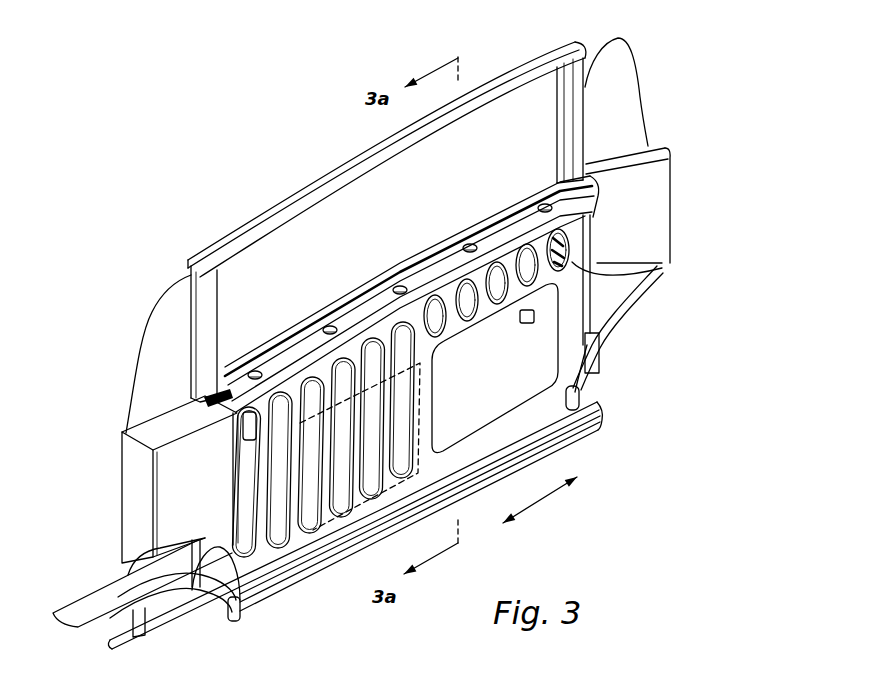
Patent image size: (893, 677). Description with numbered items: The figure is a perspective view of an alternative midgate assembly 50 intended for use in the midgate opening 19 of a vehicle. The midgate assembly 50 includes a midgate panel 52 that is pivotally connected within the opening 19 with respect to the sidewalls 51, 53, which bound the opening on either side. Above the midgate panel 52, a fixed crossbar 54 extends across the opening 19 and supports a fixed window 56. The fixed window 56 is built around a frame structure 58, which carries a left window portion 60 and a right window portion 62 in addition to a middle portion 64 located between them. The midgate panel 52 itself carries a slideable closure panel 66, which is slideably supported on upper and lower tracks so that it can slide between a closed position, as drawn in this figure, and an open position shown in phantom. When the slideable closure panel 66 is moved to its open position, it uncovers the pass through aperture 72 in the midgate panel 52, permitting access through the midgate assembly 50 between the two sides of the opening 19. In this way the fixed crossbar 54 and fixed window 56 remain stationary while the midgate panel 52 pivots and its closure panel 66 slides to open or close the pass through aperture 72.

The midgate opening 19 is at (666, 262).
The midgate assembly 50 is at (143, 203).
The sidewall 51 is at (648, 218).
The midgate panel 52 is at (567, 293).
The sidewall 53 is at (137, 505).
The fixed crossbar 54 is at (233, 388).
The fixed window 56 is at (333, 232).
The frame structure 58 is at (380, 206).
The left window portion 60 is at (157, 340).
The right window portion 62 is at (623, 87).
The middle portion 64 is at (258, 245).
The slideable closure panel 66 is at (507, 385).
The pass through aperture 72 is at (437, 413).